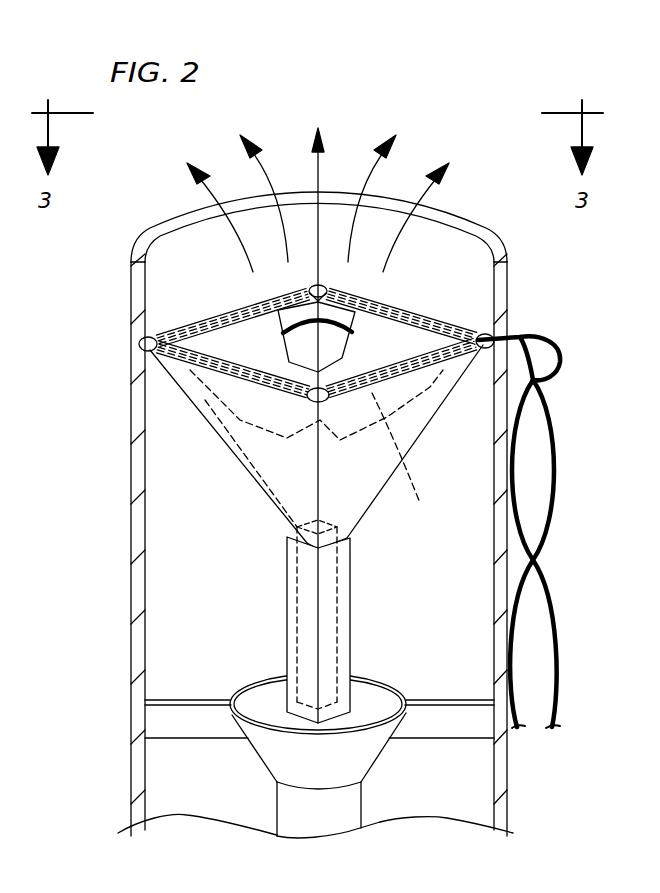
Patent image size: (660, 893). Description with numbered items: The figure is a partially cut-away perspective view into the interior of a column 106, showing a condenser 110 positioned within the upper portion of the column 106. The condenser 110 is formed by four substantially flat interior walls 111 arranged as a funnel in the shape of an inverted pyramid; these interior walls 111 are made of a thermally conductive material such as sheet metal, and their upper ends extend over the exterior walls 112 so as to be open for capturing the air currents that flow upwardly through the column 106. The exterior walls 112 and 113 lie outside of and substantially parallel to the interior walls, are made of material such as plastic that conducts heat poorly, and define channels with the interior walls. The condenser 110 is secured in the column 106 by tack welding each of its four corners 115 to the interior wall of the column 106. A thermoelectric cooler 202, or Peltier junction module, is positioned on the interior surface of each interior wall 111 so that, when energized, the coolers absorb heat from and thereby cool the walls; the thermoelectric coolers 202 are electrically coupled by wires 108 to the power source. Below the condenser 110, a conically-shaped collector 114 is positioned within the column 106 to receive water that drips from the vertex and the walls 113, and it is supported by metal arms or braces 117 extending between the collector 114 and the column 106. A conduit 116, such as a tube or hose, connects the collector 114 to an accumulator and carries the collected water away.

The column 106 is at (507, 780).
The wires 108 is at (553, 602).
The condenser 110 is at (170, 419).
The interior walls 111 is at (307, 513).
The exterior walls 112 is at (297, 547).
The exterior walls 113 is at (350, 620).
The collector 114 is at (270, 690).
The corners 115 is at (143, 347).
The conduit 116 is at (290, 810).
The support arms or braces 117 is at (157, 698).
The thermoelectric cooler 202 is at (232, 338).